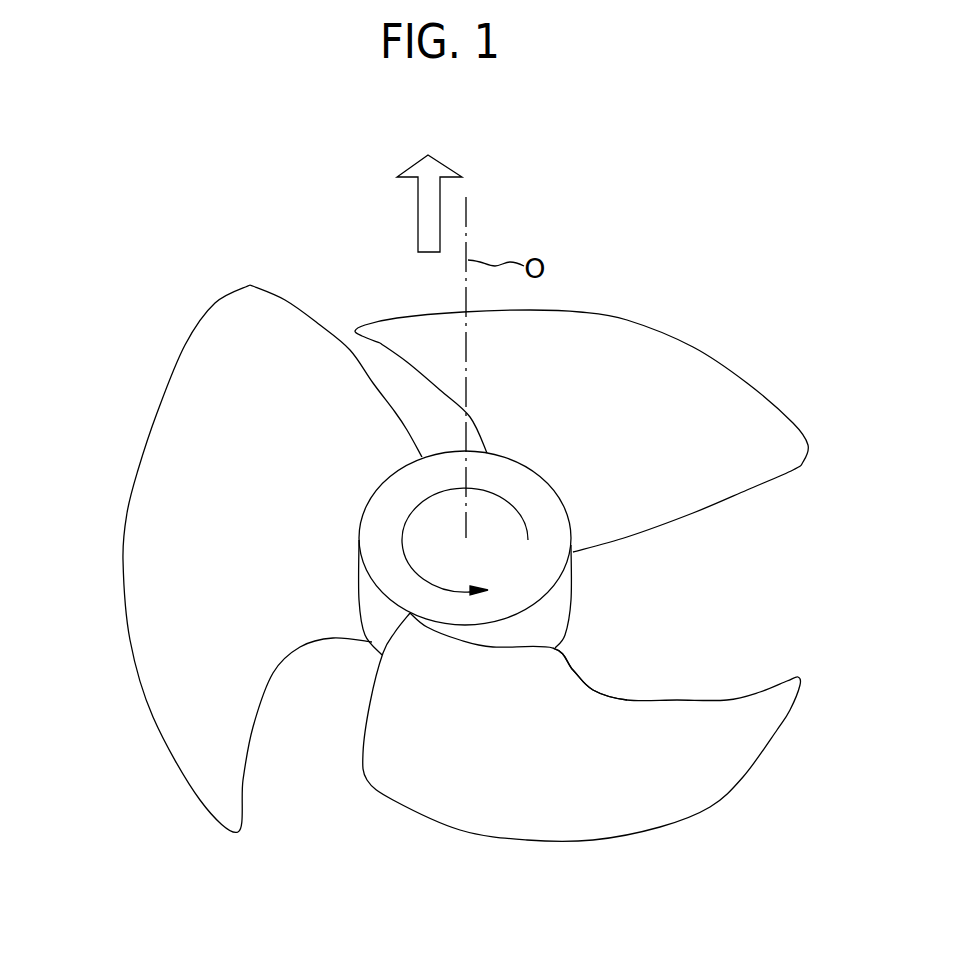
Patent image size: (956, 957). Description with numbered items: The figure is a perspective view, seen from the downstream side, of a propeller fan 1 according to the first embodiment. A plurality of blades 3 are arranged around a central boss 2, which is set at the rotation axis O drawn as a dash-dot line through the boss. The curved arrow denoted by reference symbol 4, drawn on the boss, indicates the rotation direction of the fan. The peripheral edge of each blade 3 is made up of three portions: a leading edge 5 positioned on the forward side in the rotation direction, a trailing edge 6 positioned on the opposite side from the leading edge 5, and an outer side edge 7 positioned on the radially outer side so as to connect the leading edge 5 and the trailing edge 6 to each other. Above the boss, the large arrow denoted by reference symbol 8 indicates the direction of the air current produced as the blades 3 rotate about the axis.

The propeller fan 1 is at (70, 294).
The boss 2 is at (560, 610).
The blade 3 is at (223, 437).
The rotation direction arrow 4 is at (503, 495).
The leading edge 5 is at (407, 363).
The trailing edge 6 is at (317, 320).
The outer side edge 7 is at (660, 327).
The air current direction arrow 8 is at (418, 212).